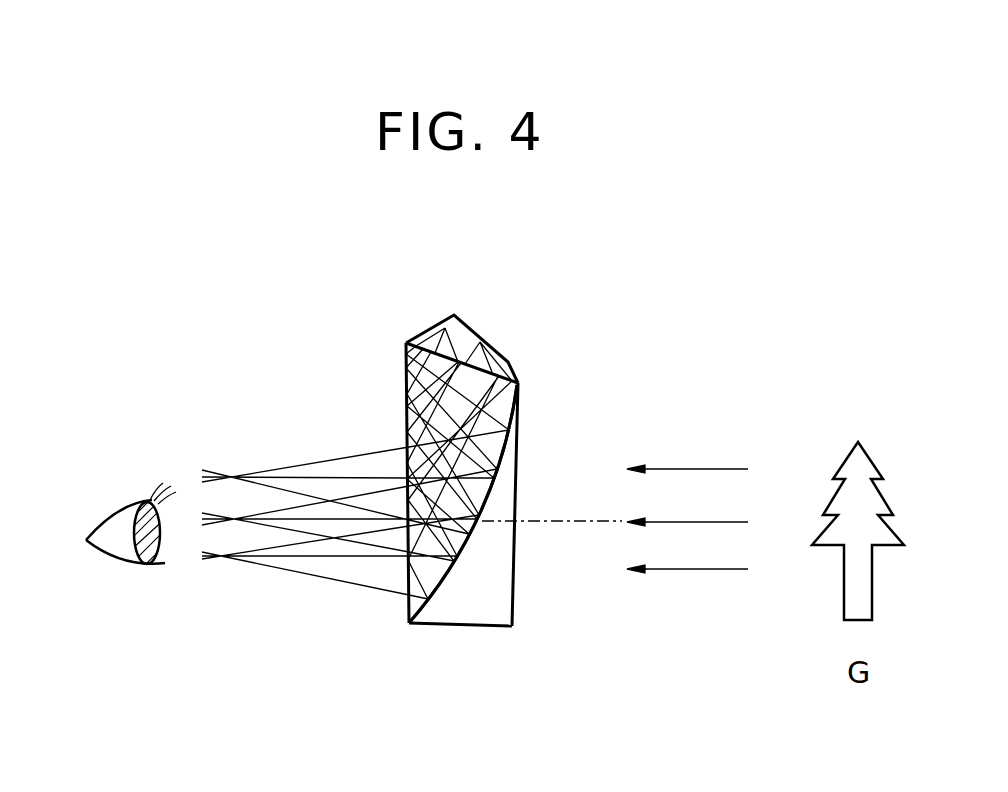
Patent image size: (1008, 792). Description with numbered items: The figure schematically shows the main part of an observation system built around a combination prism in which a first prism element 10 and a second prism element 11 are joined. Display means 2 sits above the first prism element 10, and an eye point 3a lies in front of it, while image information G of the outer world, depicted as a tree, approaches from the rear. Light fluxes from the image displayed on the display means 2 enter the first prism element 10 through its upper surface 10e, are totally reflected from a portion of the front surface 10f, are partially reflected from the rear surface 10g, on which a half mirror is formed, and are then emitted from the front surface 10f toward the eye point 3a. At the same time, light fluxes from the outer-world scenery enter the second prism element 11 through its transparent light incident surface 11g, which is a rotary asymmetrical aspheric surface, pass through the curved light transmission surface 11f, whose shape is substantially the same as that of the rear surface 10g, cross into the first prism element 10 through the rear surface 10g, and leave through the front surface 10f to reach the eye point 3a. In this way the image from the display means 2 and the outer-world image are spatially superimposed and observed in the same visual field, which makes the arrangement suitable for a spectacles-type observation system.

The display means 2 is at (472, 330).
The eye point 3a is at (148, 478).
The first prism element 10 is at (439, 451).
The upper surface 10e is at (447, 352).
The front surface 10f is at (407, 382).
The rear surface 10g is at (425, 595).
The second prism element 11 is at (508, 534).
The light transmission surface 11f is at (497, 490).
The light incident surface 11g is at (520, 541).